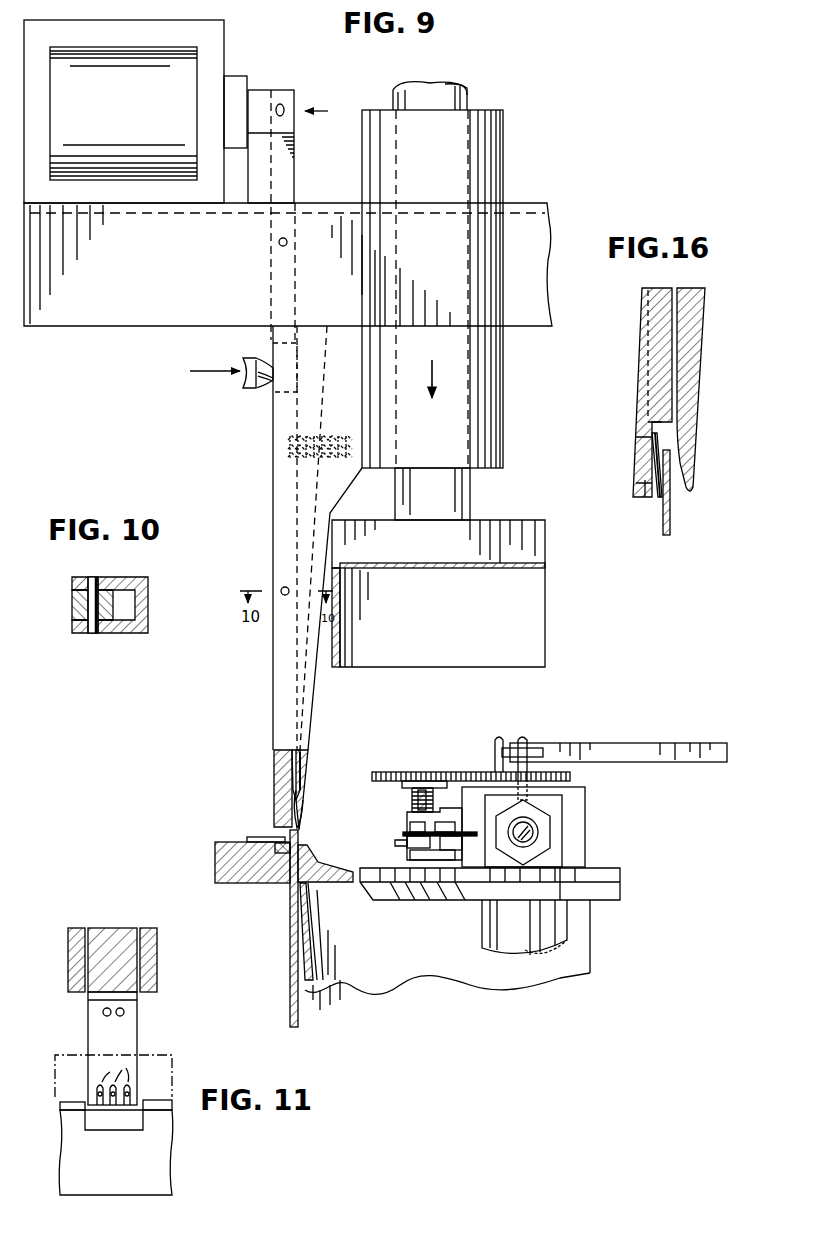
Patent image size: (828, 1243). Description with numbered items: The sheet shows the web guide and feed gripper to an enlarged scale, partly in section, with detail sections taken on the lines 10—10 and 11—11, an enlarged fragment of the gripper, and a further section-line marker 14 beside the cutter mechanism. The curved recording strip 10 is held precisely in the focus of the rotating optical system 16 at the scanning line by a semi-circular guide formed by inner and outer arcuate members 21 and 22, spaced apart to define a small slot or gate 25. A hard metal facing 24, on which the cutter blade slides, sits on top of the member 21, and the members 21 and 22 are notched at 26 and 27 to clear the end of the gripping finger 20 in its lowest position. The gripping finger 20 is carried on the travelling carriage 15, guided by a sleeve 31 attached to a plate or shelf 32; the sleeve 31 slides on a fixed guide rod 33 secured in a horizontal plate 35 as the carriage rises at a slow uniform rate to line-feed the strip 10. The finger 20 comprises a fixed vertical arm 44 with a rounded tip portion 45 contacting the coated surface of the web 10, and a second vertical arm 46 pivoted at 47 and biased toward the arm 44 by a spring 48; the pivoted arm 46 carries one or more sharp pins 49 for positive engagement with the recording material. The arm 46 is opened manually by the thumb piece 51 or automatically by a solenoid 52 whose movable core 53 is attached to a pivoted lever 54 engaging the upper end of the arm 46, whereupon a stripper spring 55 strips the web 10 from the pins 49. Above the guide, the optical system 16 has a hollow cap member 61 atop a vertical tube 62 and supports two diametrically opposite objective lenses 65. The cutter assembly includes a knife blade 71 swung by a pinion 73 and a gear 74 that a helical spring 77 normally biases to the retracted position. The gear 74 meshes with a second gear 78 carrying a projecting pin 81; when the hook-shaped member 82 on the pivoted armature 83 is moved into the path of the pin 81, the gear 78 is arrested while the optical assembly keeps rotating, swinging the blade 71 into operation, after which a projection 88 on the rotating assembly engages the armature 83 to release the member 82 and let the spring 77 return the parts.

In FIG. 9, the recording strip 10 is at (290, 993).
In FIG. 16, the recording strip 10 is at (671, 524).
In FIG. 9, the section line 11 is at (292, 768).
In FIG. 9, the section line 14 is at (367, 770).
In FIG. 9, the travelling carriage 15 is at (538, 193).
In FIG. 9, the optical system 16 is at (590, 832).
In FIG. 9, the gripping finger 20 is at (268, 790).
In FIG. 16, the gripping finger 20 is at (698, 462).
In FIG. 11, the gripping finger 20 is at (158, 1006).
In FIG. 9, the inner arcuate member 21 is at (215, 848).
In FIG. 11, the inner arcuate member 21 is at (175, 1168).
In FIG. 9, the outer arcuate member 22 is at (340, 885).
In FIG. 9, the hard metal facing 24 is at (260, 838).
In FIG. 11, the hard metal facing 24 is at (160, 1100).
In FIG. 9, the semi-circular slot or gate 25 is at (310, 895).
In FIG. 11, the semi-circular slot or gate 25 is at (85, 1164).
In FIG. 9, the notch 26 is at (278, 845).
In FIG. 11, the notch 26 is at (98, 1120).
In FIG. 9, the notch 27 is at (300, 838).
In FIG. 9, the sleeve 31 is at (492, 430).
In FIG. 9, the plate or shelf 32 is at (166, 326).
In FIG. 9, the guide rod 33 is at (393, 92).
In FIG. 9, the horizontal plate 35 is at (497, 522).
In FIG. 9, the fixed vertical arm 44 is at (338, 487).
In FIG. 16, the fixed vertical arm 44 is at (700, 345).
In FIG. 10, the fixed vertical arm 44 is at (135, 590).
In FIG. 11, the fixed vertical arm 44 is at (76, 970).
In FIG. 9, the rounded tip portion 45 is at (300, 806).
In FIG. 16, the rounded tip portion 45 is at (683, 470).
In FIG. 9, the pivoted arm 46 is at (273, 707).
In FIG. 16, the pivoted arm 46 is at (642, 365).
In FIG. 10, the pivoted arm 46 is at (72, 612).
In FIG. 11, the pivoted arm 46 is at (118, 928).
In FIG. 9, the pivot 47 is at (281, 590).
In FIG. 10, the pivot 47 is at (93, 634).
In FIG. 9, the spring 48 is at (325, 437).
In FIG. 16, the sharp pins 49 is at (655, 500).
In FIG. 11, the sharp pins 49 is at (113, 1078).
In FIG. 9, the thumb piece 51 is at (243, 362).
In FIG. 9, the solenoid 52 is at (232, 55).
In FIG. 9, the movable core 53 is at (265, 90).
In FIG. 9, the pivoted lever 54 is at (292, 160).
In FIG. 16, the stripper spring 55 is at (650, 478).
In FIG. 11, the stripper spring 55 is at (90, 1024).
In FIG. 9, the hollow cap member 61 is at (588, 848).
In FIG. 9, the vertical tube 62 is at (490, 930).
In FIG. 9, the objective lenses 65 is at (535, 828).
In FIG. 9, the cutter blade 71 is at (403, 834).
In FIG. 9, the pinion 73 is at (407, 846).
In FIG. 9, the gear 74 is at (392, 772).
In FIG. 9, the helical spring 77 is at (412, 800).
In FIG. 9, the second gear 78 is at (572, 778).
In FIG. 9, the projecting pin 81 is at (498, 737).
In FIG. 9, the hook-shaped operating member 82 is at (502, 752).
In FIG. 9, the pivoted armature 83 is at (680, 743).
In FIG. 9, the projection 88 is at (524, 737).